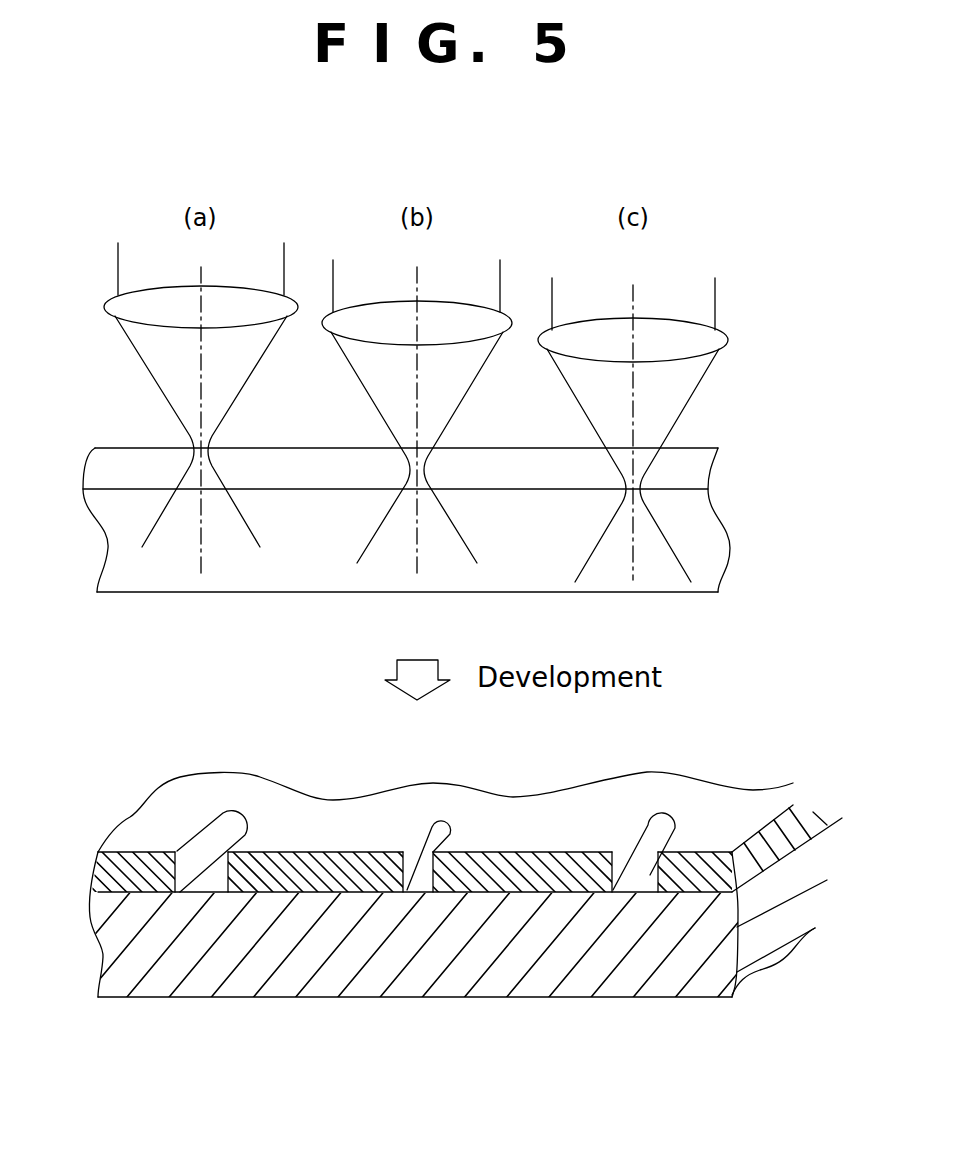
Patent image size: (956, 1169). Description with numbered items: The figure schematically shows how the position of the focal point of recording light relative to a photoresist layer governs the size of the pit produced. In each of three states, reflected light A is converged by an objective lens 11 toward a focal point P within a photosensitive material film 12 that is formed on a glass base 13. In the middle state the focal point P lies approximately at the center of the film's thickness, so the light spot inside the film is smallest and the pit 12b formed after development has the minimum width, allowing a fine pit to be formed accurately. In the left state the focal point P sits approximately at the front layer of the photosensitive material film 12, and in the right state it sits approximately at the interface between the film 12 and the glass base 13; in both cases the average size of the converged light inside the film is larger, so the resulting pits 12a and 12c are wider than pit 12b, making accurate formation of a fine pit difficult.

The objective lens 11 is at (698, 343).
The photosensitive material film 12 is at (697, 473).
The glass base 13 is at (715, 550).
The pit 12a is at (222, 832).
The pit 12b is at (442, 830).
The pit 12c is at (658, 828).
The reflected light A is at (132, 260).
The focal point P is at (190, 449).